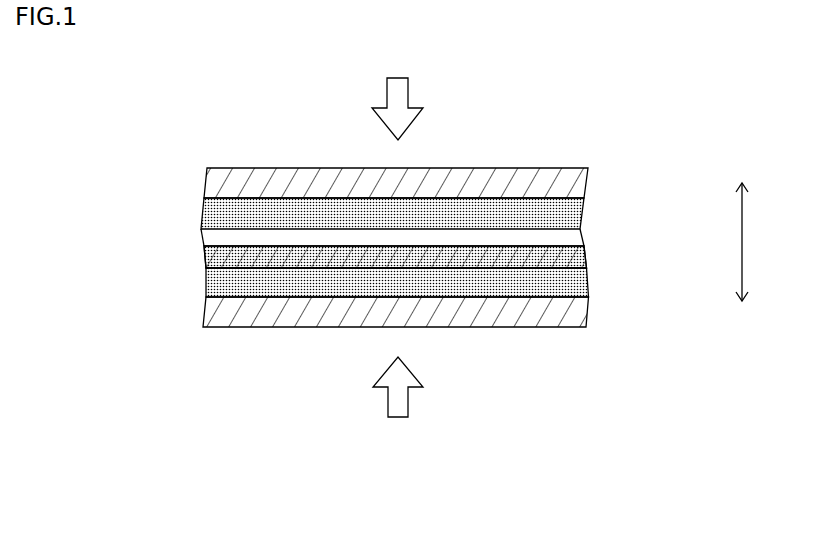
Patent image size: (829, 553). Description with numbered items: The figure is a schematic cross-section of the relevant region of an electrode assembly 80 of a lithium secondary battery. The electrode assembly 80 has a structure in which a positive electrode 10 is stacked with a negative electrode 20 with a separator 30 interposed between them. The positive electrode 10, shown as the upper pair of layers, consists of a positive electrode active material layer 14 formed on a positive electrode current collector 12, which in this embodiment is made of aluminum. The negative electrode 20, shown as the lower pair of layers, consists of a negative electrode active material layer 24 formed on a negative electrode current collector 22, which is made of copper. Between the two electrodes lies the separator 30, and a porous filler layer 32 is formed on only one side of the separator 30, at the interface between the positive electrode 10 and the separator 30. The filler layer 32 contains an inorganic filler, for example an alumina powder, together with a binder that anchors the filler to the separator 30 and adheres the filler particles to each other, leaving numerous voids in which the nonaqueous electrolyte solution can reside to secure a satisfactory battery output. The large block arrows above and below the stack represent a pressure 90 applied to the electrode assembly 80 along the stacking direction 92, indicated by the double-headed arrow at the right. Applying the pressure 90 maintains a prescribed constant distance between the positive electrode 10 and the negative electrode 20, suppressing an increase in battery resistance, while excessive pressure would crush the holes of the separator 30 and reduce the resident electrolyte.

The positive electrode 10 is at (657, 165).
The positive electrode current collector 12 is at (590, 181).
The positive electrode active material layer 14 is at (585, 210).
The negative electrode 20 is at (657, 270).
The negative electrode current collector 22 is at (588, 312).
The negative electrode active material layer 24 is at (590, 283).
The separator 30 is at (206, 258).
The filler layer 32 is at (203, 236).
The electrode assembly 80 is at (591, 101).
The pressure 90 is at (398, 78).
The stacking direction 92 is at (756, 242).